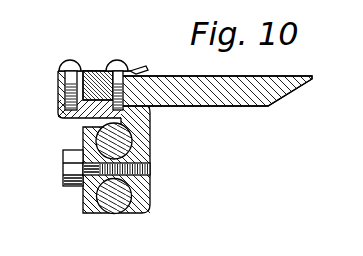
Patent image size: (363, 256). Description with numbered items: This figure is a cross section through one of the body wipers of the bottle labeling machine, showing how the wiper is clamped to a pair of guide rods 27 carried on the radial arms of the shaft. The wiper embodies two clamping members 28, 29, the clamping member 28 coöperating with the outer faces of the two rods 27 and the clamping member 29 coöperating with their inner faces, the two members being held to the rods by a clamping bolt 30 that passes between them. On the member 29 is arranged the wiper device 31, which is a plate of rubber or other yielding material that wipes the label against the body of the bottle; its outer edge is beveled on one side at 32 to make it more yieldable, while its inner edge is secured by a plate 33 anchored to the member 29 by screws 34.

The guide rods 27 is at (149, 131).
The clamping member 28 is at (88, 190).
The clamping member 29 is at (144, 197).
The clamping bolt 30 is at (75, 169).
The wiper device 31 is at (127, 65).
The beveled edge 32 is at (298, 88).
The plate 33 is at (92, 70).
The screws 34 is at (69, 60).